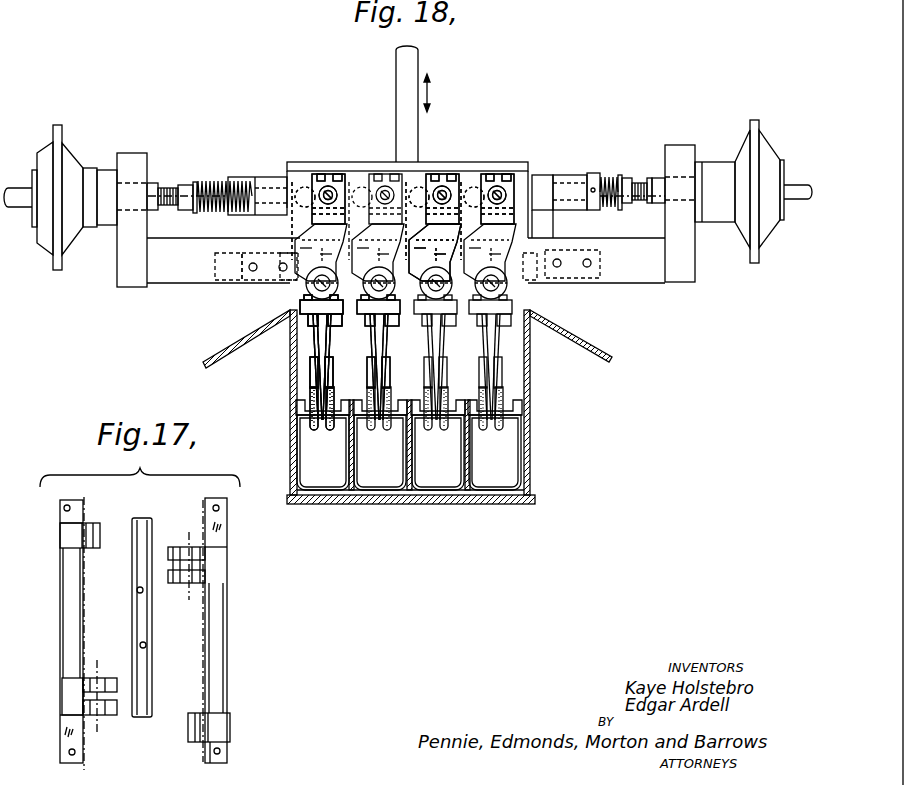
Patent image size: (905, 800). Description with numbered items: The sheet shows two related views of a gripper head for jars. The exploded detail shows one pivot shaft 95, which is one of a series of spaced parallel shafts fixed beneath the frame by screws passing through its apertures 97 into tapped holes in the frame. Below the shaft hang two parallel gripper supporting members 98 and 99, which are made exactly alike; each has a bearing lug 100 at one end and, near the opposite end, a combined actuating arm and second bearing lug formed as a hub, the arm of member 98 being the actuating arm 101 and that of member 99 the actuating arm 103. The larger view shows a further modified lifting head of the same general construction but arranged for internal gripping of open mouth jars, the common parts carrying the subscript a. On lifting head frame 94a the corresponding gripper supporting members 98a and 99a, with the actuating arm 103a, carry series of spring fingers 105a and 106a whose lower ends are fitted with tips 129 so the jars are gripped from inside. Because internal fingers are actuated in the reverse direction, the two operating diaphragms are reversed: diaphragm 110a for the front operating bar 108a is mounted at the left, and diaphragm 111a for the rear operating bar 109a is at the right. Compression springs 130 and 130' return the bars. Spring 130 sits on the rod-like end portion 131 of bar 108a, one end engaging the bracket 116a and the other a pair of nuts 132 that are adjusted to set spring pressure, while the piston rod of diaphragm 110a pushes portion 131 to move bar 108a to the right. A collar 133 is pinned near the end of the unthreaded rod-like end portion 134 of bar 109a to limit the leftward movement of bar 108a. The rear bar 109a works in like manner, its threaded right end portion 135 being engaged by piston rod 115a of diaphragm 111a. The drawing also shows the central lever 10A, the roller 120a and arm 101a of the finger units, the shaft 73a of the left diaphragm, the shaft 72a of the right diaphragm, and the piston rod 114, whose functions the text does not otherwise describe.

In FIG. 18, the shaft 73a is at (14, 187).
In FIG. 18, the diaphragm 110a is at (68, 152).
In FIG. 18, the threaded rod 114 is at (154, 187).
In FIG. 18, the rod-like end portion 131 is at (174, 186).
In FIG. 18, the compression spring 130 is at (224, 178).
In FIG. 18, the nuts 132 is at (194, 212).
In FIG. 18, the bracket 116a is at (262, 223).
In FIG. 18, the rear operating bar 109a is at (290, 177).
In FIG. 18, the front operating bar 108a is at (348, 174).
In FIG. 18, the operating rod 10A is at (398, 118).
In FIG. 18, the roller 120a is at (432, 187).
In FIG. 18, the clamp arm 101a is at (478, 174).
In FIG. 18, the collar 133 is at (598, 175).
In FIG. 18, the rod-like end portion 134 is at (542, 187).
In FIG. 18, the compression spring 130' is at (630, 176).
In FIG. 18, the piston rod 115a is at (655, 178).
In FIG. 18, the diaphragm 111a is at (741, 148).
In FIG. 18, the shaft 72a is at (797, 200).
In FIG. 18, the threaded rod-like right end portion 135 is at (642, 203).
In FIG. 18, the lifting head frame 94a is at (165, 277).
In FIG. 18, the actuating arm 103a is at (497, 243).
In FIG. 18, the gripper supporting member 99a is at (284, 322).
In FIG. 18, the gripper supporting member 98a is at (323, 330).
In FIG. 18, the spring fingers 106a is at (317, 347).
In FIG. 18, the spring fingers 105a is at (325, 353).
In FIG. 18, the tips 129 is at (315, 433).
In FIG. 17, the bearing lug 100 is at (95, 522).
In FIG. 17, the pivot shaft 95 is at (140, 516).
In FIG. 17, the actuating arm 101 is at (168, 540).
In FIG. 17, the gripper supporting member 99 is at (65, 630).
In FIG. 17, the apertures 97 is at (141, 643).
In FIG. 17, the gripper supporting member 98 is at (217, 628).
In FIG. 17, the actuating arm 103 is at (115, 715).